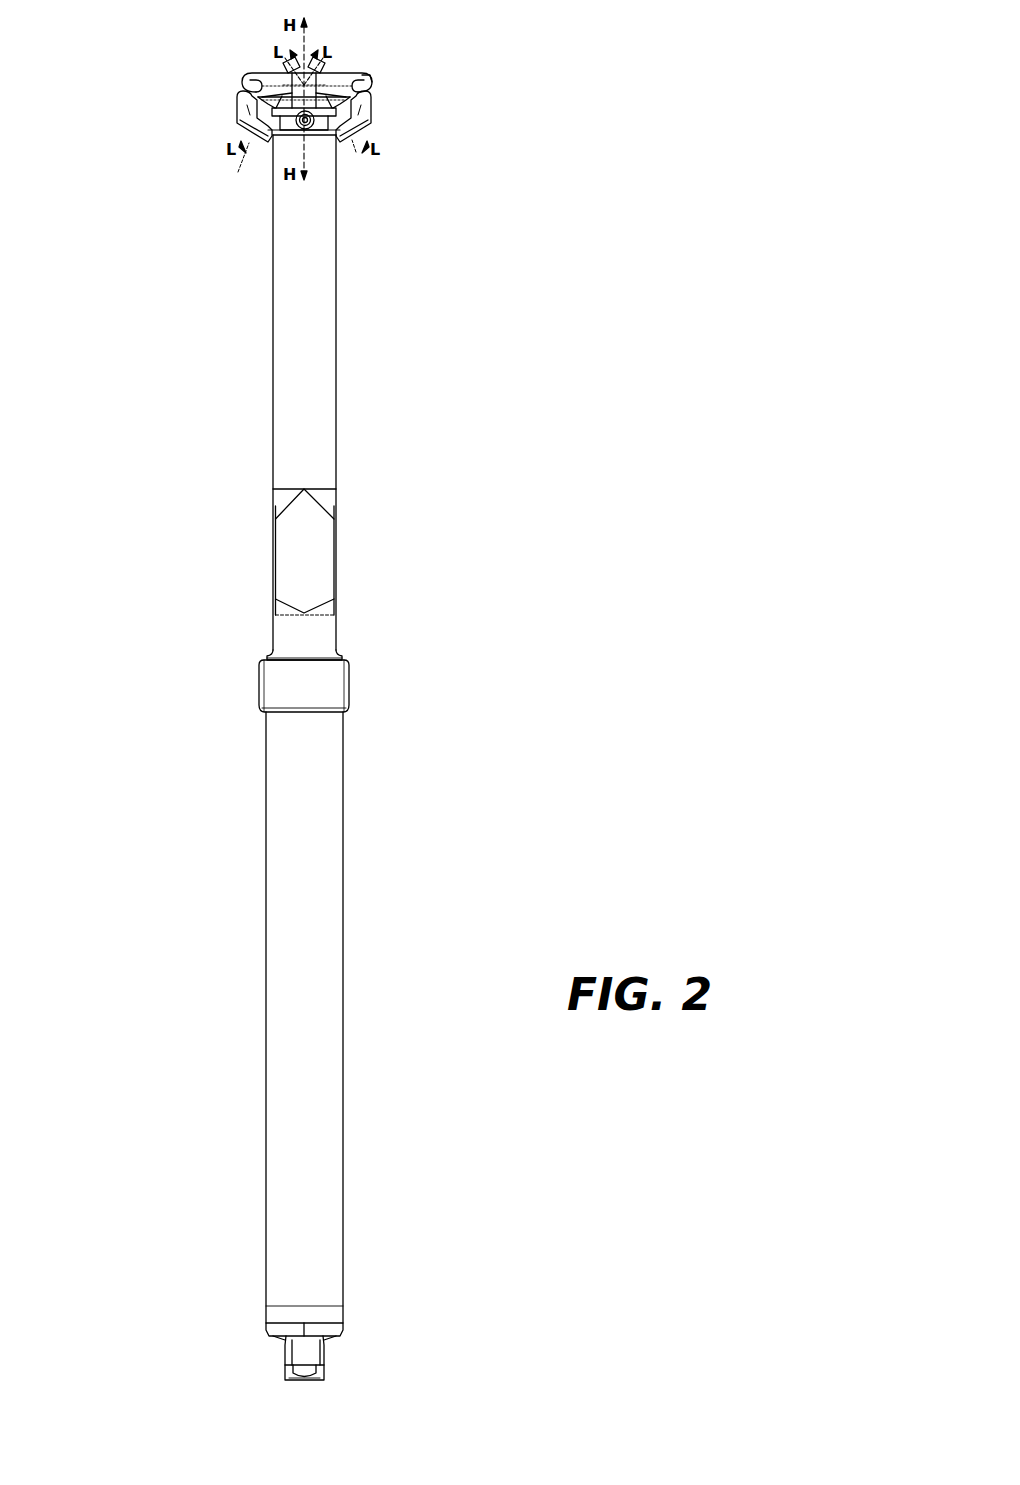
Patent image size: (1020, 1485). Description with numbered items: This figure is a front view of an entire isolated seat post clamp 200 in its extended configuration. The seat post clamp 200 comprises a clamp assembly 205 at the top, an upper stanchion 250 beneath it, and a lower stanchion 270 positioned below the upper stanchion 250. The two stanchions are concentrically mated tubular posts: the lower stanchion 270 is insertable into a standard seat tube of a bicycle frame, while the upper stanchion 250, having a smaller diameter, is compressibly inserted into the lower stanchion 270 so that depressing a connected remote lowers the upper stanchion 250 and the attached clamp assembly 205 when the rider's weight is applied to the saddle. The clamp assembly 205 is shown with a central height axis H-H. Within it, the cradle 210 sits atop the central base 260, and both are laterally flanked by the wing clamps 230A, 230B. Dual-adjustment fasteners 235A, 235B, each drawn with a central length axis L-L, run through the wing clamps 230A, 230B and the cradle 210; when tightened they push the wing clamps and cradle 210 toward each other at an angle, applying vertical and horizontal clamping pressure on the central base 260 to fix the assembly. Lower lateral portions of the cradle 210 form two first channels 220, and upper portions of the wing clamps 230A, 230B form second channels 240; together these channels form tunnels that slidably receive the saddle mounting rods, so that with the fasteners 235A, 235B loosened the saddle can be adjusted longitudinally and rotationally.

The seat post clamp 200 is at (672, 94).
The clamp assembly 205 is at (198, 159).
The cradle 210 is at (247, 78).
The first channels 220 is at (365, 74).
The wing clamp 230A is at (245, 110).
The wing clamp 230B is at (357, 110).
The dual-adjustment fastener 235A is at (238, 172).
The dual-adjustment fastener 235B is at (356, 152).
The second channels 240 is at (370, 102).
The upper stanchion 250 is at (290, 423).
The central base 260 is at (318, 138).
The lower stanchion 270 is at (290, 990).